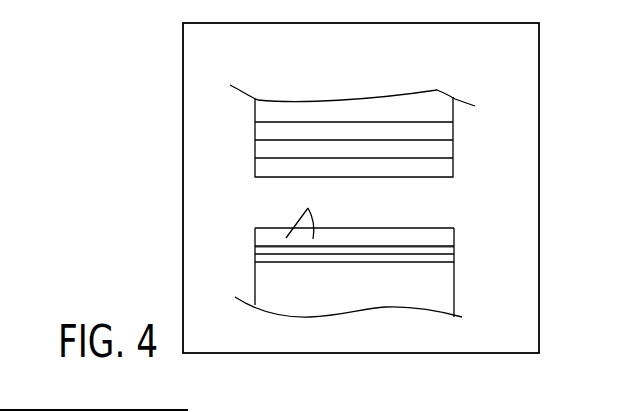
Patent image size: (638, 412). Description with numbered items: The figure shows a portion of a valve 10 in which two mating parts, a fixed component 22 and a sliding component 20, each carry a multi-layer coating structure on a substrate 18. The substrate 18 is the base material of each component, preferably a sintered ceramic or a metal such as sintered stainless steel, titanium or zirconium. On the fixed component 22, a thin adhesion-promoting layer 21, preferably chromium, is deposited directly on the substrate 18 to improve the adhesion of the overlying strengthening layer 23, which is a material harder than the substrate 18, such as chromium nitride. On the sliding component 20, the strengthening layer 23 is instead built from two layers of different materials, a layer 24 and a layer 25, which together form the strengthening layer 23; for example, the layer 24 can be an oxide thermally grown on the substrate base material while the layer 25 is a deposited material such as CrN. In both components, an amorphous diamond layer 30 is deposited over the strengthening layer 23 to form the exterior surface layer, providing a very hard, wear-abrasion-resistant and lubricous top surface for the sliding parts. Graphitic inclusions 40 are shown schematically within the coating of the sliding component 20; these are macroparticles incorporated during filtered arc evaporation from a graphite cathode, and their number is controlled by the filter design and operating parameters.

The valve 10 is at (540, 188).
The substrate 18 is at (262, 113).
The sliding component 20 is at (230, 297).
The adhesion-promoting layer 21 is at (448, 131).
The fixed component 22 is at (229, 175).
The strengthening layer 23 is at (447, 149).
The layer 24 is at (256, 248).
The layer 25 is at (256, 263).
The amorphous diamond layer 30 is at (445, 169).
The graphitic inclusions 40 is at (311, 214).